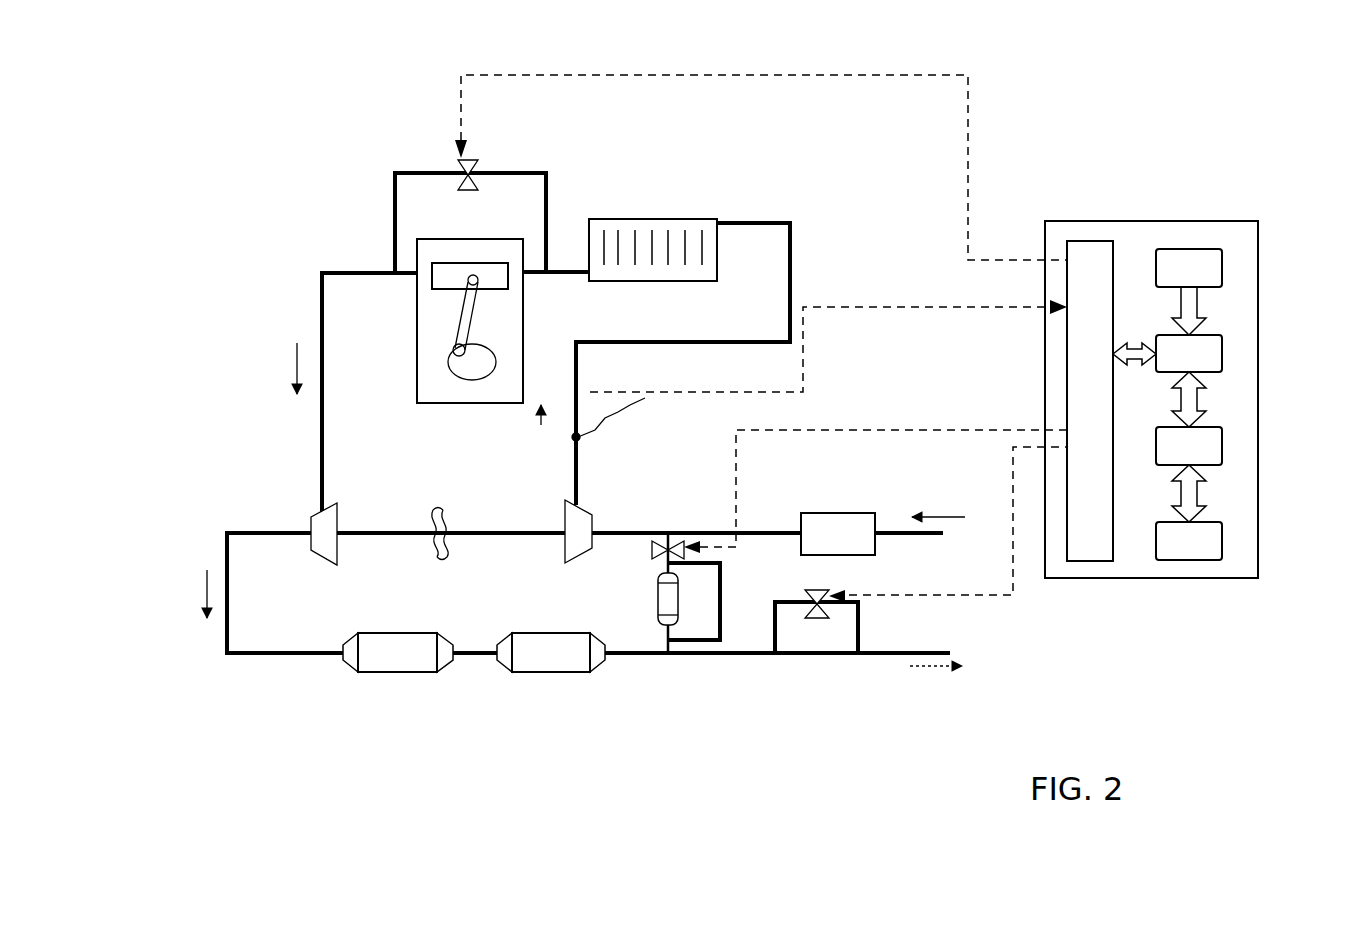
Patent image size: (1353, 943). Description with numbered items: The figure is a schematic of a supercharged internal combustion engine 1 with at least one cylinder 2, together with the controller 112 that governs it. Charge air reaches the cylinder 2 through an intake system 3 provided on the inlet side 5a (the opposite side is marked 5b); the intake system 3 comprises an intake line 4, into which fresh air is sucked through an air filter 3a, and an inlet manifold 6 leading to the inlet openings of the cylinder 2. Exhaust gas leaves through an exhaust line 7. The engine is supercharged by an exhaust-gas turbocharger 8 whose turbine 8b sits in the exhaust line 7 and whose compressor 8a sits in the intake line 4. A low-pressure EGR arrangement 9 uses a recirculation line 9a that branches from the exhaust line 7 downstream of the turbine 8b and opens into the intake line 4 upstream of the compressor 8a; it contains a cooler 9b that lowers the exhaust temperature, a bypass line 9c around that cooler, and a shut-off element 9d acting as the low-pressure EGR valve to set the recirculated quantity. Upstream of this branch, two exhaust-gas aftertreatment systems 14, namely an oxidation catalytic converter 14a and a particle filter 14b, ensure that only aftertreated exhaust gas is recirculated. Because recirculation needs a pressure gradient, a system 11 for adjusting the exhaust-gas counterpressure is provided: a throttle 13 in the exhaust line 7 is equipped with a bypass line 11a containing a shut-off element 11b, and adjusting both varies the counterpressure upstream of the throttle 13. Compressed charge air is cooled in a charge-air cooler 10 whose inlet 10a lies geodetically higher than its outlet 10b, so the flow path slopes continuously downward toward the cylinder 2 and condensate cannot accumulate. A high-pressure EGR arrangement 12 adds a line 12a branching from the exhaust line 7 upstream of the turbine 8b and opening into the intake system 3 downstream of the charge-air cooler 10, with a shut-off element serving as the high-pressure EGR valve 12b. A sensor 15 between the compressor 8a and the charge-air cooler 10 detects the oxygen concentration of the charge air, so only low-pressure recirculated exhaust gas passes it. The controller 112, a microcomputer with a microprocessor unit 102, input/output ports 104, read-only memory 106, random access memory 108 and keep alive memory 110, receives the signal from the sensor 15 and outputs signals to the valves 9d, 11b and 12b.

The internal combustion engine 1 is at (268, 183).
The cylinder 2 is at (425, 316).
The intake system 3 is at (815, 396).
The air filter 3a is at (835, 526).
The intake line 4 is at (795, 300).
The inlet side 5a is at (780, 187).
The intake air flow 5b is at (287, 226).
The inlet manifold 6 is at (534, 274).
The exhaust line 7 is at (225, 559).
The exhaust-gas turbocharger 8 is at (464, 553).
The compressor 8a is at (570, 523).
The turbine 8b is at (330, 522).
The low-pressure EGR arrangement 9 is at (597, 592).
The recirculation line 9a is at (656, 558).
The cooler 9b is at (655, 605).
The bypass line 9c is at (721, 583).
The low-pressure EGR valve 9d is at (682, 546).
The charge-air cooler 10 is at (625, 228).
The inlet into the charge-air cooler 10a is at (755, 220).
The outlet out of the charge-air cooler 10b is at (575, 277).
The system for adjusting the exhaust-gas counterpressure 11 is at (904, 593).
The bypass line 11a is at (860, 633).
The shut-off element 11b is at (826, 592).
The high-pressure EGR arrangement 12 is at (365, 149).
The line 12a is at (514, 172).
The high-pressure EGR valve 12b is at (474, 158).
The throttle 13 is at (806, 644).
The exhaust-gas aftertreatment systems 14 is at (442, 680).
The oxidation catalytic converter 14a is at (382, 663).
The particle filter 14b is at (556, 663).
The sensor 15 is at (580, 437).
The microprocessor unit 102 is at (1222, 345).
The input/output ports 104 is at (1113, 247).
The read-only memory 106 is at (1222, 268).
The random access memory 108 is at (1222, 440).
The keep alive memory 110 is at (1222, 535).
The controller 112 is at (1243, 221).